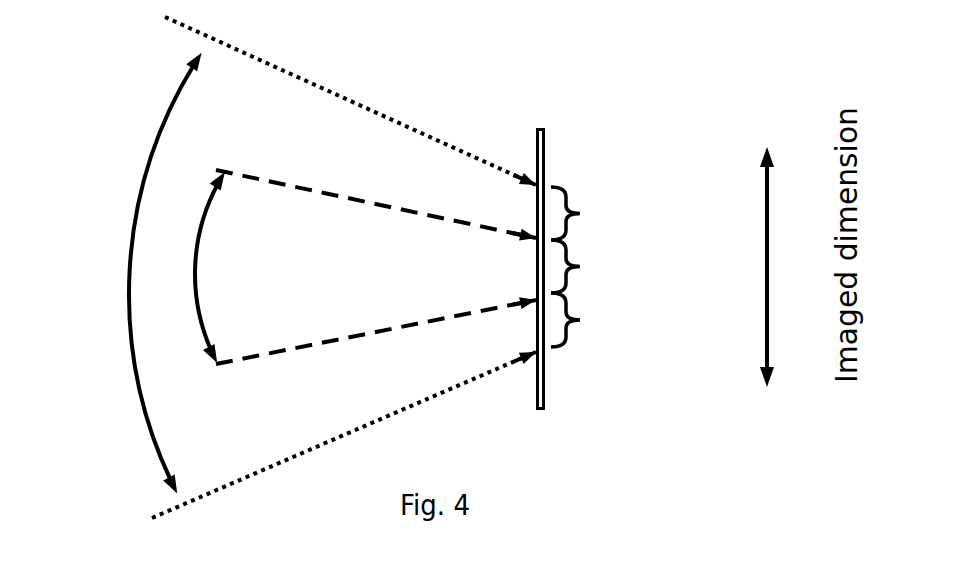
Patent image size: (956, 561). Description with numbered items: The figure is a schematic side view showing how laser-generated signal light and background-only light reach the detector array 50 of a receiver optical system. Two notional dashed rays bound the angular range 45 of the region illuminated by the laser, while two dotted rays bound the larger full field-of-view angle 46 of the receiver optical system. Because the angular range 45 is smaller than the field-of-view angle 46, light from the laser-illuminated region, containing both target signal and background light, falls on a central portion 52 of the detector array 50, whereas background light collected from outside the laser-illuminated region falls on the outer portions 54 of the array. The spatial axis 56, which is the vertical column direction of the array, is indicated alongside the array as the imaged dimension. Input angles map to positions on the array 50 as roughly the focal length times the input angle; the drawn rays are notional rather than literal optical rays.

The angular range 45 is at (243, 303).
The field-of-view angle 46 is at (122, 313).
The detector array 50 is at (550, 127).
The central portion 52 is at (587, 266).
The outer portions 54 is at (583, 215).
The spatial axis 56 is at (793, 249).